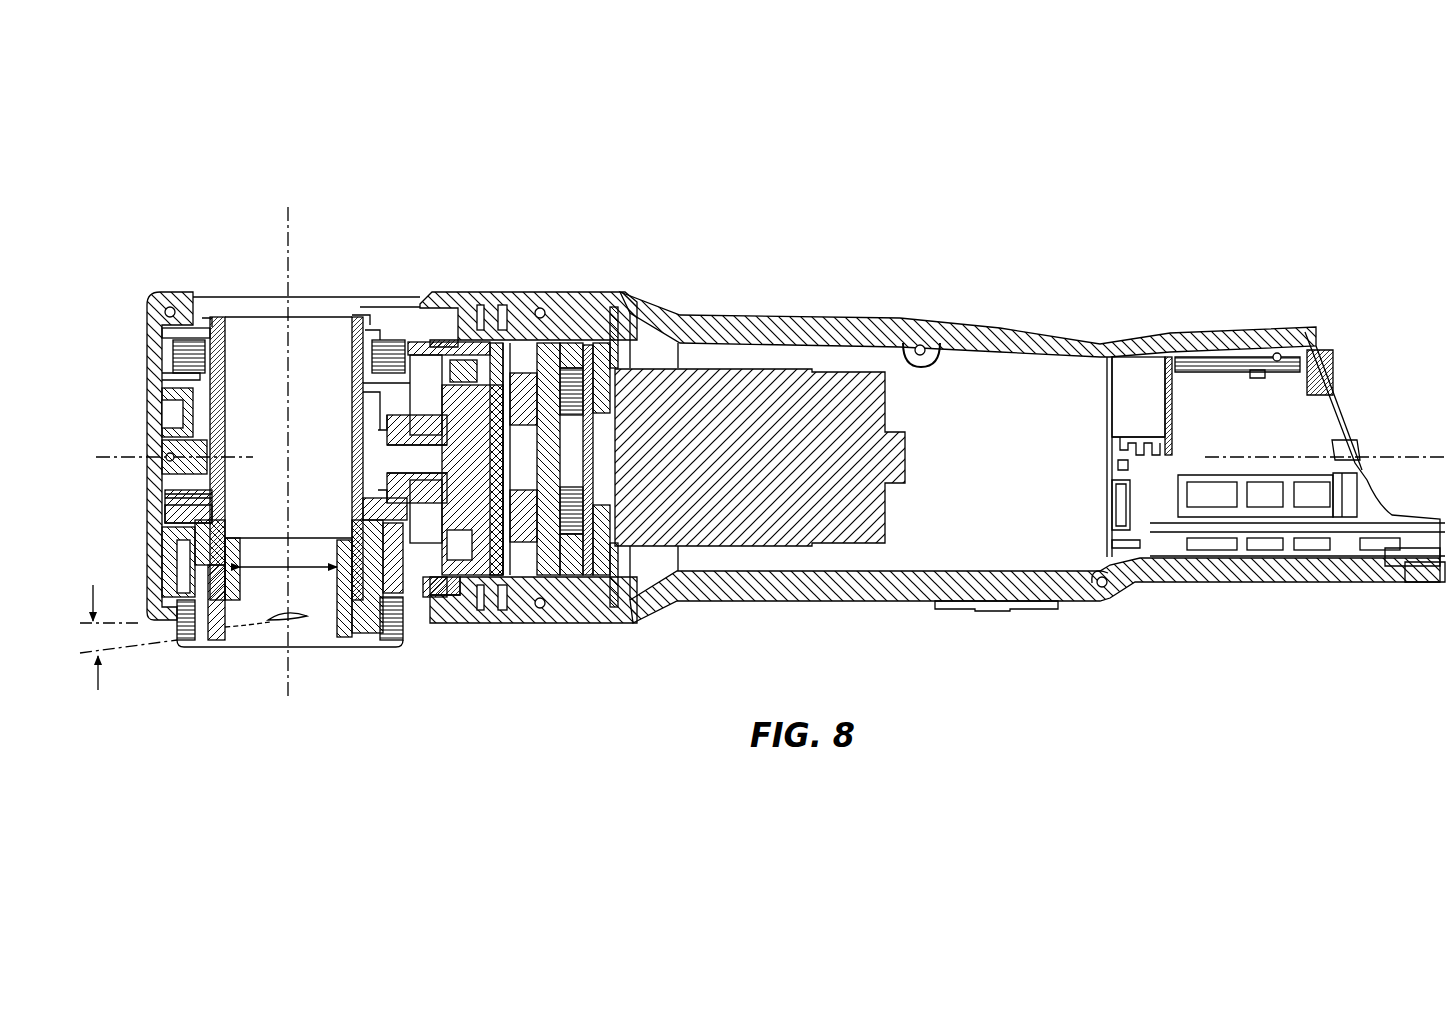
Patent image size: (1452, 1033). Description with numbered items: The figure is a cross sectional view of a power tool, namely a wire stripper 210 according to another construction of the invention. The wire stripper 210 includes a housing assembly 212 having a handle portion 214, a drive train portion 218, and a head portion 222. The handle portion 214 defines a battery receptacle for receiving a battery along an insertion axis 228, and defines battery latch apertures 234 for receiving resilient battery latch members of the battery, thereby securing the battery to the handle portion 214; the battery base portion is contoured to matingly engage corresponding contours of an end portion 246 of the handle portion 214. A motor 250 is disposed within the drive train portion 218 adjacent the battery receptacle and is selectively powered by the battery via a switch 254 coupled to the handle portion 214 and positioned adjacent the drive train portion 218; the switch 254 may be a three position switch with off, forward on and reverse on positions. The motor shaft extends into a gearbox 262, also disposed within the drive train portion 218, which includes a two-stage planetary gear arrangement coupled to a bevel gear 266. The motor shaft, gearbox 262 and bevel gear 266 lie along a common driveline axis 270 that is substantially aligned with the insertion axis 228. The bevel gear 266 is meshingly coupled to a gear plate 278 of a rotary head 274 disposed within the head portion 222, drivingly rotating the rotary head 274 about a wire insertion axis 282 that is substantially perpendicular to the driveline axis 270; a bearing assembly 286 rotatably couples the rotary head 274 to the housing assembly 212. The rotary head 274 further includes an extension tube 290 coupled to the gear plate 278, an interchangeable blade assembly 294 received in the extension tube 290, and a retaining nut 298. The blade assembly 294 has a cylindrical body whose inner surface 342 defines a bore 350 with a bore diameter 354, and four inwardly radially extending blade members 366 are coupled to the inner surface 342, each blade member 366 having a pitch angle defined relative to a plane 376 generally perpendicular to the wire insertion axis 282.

The wire stripper 210 is at (1090, 168).
The housing assembly 212 is at (812, 302).
The handle portion 214 is at (1200, 330).
The drive train portion 218 is at (598, 292).
The head portion 222 is at (157, 300).
The insertion axis 228 is at (1386, 456).
The battery latch apertures 234 is at (1356, 500).
The end portion 246 is at (1400, 520).
The motor 250 is at (704, 385).
The switch 254 is at (1000, 611).
The gearbox 262 is at (540, 615).
The bevel gear 266 is at (478, 617).
The driveline axis 270 is at (132, 456).
The rotary head 274 is at (183, 492).
The gear plate 278 is at (180, 512).
The wire insertion axis 282 is at (290, 257).
The bearing assembly 286 is at (438, 620).
The extension tube 290 is at (207, 547).
The blade assembly 294 is at (350, 640).
The retaining nut 298 is at (385, 640).
The inner surface 342 is at (351, 628).
The bore 350 is at (385, 545).
The bore diameter 354 is at (303, 567).
The blade members 366 is at (277, 648).
The plane 376 is at (141, 623).